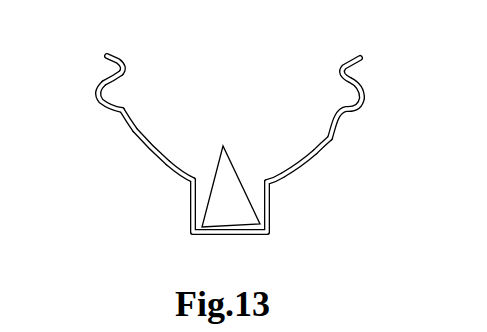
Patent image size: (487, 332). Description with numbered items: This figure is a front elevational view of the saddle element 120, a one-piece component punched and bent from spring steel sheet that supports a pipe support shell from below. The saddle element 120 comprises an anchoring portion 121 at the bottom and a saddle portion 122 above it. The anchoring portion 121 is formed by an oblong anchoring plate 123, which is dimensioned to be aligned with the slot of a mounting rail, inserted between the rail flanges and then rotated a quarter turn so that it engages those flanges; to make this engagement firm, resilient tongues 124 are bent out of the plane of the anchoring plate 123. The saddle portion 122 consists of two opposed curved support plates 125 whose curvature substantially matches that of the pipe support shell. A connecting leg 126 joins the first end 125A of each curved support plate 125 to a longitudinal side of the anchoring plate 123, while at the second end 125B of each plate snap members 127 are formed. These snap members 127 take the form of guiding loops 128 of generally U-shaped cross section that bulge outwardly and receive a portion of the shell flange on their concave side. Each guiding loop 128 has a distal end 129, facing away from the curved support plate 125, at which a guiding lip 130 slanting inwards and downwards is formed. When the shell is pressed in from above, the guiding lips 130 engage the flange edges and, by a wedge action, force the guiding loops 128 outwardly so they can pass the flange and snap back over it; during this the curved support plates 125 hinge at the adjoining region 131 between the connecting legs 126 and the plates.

The saddle element 120 is at (374, 61).
The anchoring portion 121 is at (199, 247).
The saddle portion 122 is at (138, 160).
The anchoring plate 123 is at (233, 238).
The resilient tongues 124 is at (231, 174).
The curved support plates 125 is at (139, 134).
The first end 125A is at (188, 190).
The second end 125B is at (123, 120).
The connecting leg 126 is at (188, 207).
The snap members 127 is at (118, 94).
The guiding loops 128 is at (98, 91).
The distal end 129 is at (119, 72).
The guiding lip 130 is at (113, 57).
The adjoining region 131 is at (192, 176).